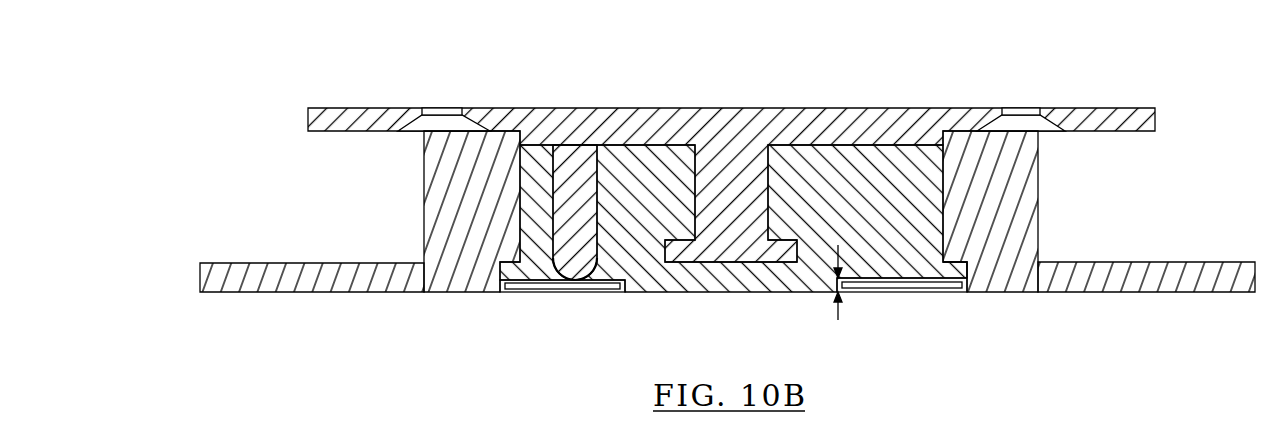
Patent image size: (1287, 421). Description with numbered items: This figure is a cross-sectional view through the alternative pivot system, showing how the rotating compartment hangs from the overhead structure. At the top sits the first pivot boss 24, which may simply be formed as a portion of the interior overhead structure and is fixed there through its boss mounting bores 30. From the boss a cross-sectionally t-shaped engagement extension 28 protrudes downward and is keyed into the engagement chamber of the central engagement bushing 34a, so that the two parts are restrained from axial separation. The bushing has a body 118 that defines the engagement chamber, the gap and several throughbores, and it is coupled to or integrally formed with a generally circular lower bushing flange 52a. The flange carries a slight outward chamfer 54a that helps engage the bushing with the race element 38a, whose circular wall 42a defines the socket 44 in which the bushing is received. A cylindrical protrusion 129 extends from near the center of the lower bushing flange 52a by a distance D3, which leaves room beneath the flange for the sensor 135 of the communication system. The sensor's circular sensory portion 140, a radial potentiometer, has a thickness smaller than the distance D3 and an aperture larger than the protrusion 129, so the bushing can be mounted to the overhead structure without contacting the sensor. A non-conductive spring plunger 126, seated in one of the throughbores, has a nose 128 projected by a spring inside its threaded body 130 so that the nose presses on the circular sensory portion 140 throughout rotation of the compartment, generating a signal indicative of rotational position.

The first pivot boss 24 is at (809, 103).
The engagement extension 28 is at (728, 172).
The boss mounting bores 30 is at (447, 110).
The circular wall 42a is at (422, 203).
The socket 44 is at (940, 172).
The race element 38a is at (306, 294).
The lower bushing flange 52a is at (975, 272).
The central engagement bushing 34a is at (656, 298).
The cylindrical protrusion 129 is at (783, 293).
The non-conductive spring plunger 126 is at (573, 134).
The nose 128 is at (578, 268).
The threaded body 130 is at (545, 238).
The sensor 135 is at (561, 302).
The circular sensory portion 140 is at (545, 287).
The body 118 is at (872, 238).
The outward chamfer 54a is at (937, 265).
The distance D3 is at (457, 347).